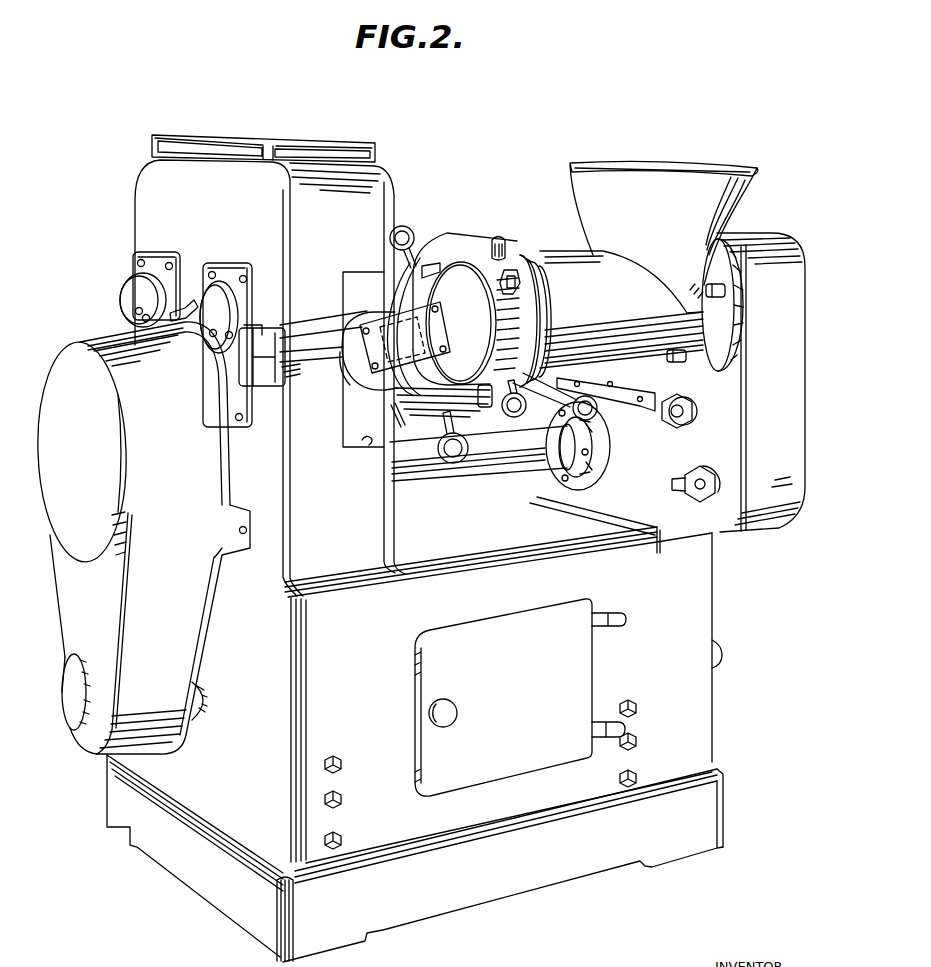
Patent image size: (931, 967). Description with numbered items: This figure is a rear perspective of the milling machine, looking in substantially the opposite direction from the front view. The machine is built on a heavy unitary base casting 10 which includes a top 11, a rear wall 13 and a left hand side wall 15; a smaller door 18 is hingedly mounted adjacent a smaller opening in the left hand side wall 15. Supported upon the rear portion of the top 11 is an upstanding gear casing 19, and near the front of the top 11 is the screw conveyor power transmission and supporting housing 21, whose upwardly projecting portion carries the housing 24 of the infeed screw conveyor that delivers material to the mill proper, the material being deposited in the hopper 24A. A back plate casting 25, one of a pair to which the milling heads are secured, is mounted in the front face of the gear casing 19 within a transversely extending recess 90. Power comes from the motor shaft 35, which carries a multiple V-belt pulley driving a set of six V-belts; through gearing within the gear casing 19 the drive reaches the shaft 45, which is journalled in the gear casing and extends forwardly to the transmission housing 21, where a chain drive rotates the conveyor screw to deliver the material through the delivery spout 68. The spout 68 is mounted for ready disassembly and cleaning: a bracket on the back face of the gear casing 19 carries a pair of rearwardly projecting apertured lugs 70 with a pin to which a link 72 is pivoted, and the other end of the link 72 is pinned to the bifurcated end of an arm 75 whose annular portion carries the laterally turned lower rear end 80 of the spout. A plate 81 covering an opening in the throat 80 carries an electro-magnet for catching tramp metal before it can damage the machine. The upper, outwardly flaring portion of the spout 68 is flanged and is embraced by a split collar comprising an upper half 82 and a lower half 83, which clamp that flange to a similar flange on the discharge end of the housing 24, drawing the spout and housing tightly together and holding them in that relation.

The unitary base casting 10 is at (512, 886).
The top 11 is at (500, 537).
The rear wall 13 is at (258, 757).
The left hand side wall 15 is at (703, 601).
The smaller door 18 is at (536, 712).
The gear casing 19 is at (353, 233).
The screw conveyor power transmission and supporting housing 21 is at (603, 497).
The housing of infeed screw conveyor 24 is at (606, 307).
The hopper 24A is at (680, 228).
The back plate casting 25 is at (375, 307).
The motor shaft 35 is at (204, 695).
The shaft 45 is at (418, 477).
The delivery spout 68 is at (469, 303).
The apertured lugs 70 is at (257, 328).
The link 72 is at (252, 352).
The arm 75 is at (312, 338).
The laterally turned lower rear end 80 is at (380, 381).
The plate 81 is at (396, 356).
The upper half of split collar 82 is at (445, 243).
The lower half of split collar 83 is at (527, 335).
The transversely extending recess 90 is at (364, 443).